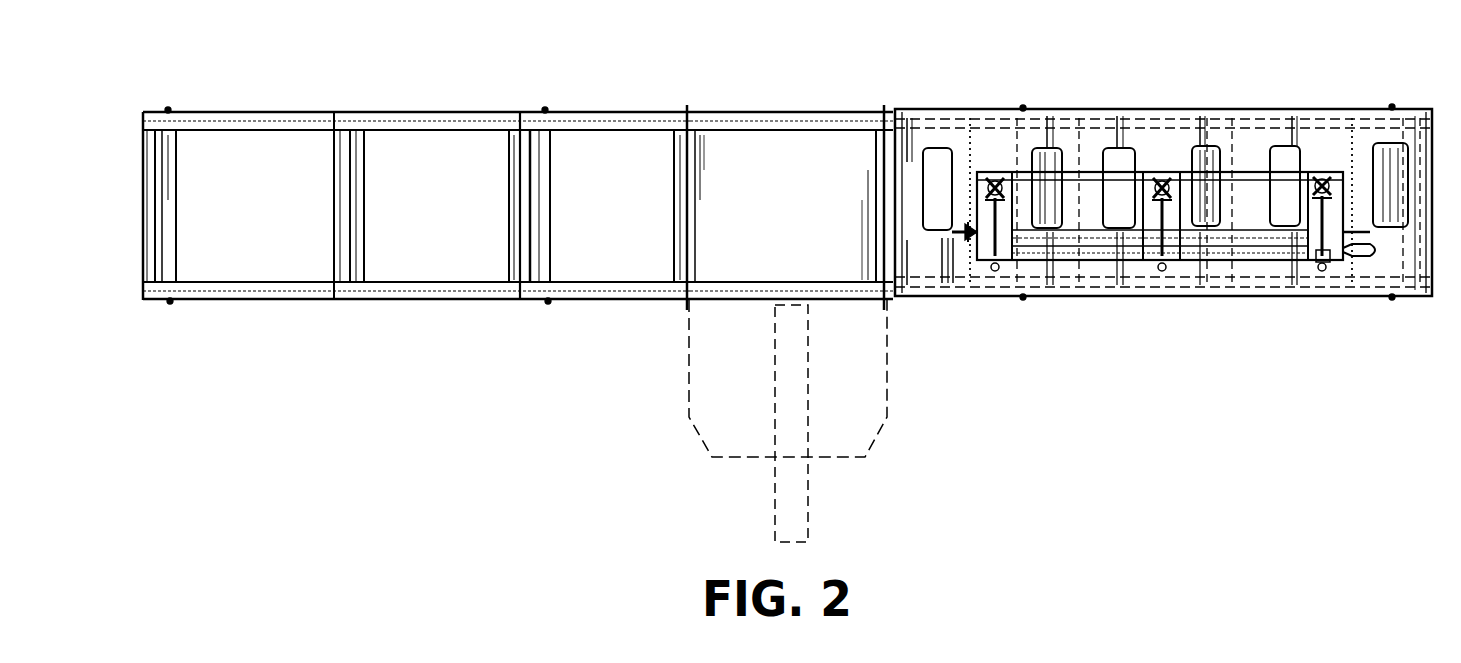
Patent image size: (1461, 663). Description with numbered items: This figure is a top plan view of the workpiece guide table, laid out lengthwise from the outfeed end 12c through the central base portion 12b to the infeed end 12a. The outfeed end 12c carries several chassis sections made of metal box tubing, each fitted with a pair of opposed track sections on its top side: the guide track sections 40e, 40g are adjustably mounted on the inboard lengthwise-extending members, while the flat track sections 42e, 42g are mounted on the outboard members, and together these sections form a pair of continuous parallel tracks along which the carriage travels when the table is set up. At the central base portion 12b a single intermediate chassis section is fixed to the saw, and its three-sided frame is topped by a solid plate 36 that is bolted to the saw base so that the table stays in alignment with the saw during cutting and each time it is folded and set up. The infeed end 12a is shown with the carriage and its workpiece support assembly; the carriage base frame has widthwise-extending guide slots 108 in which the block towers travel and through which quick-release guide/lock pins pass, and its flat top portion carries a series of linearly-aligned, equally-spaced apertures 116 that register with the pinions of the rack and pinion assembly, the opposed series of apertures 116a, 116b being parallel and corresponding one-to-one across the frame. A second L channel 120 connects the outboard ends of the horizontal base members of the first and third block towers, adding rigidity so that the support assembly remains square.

The infeed end 12a is at (1226, 38).
The central base portion 12b is at (780, 55).
The outfeed end 12c is at (380, 47).
The solid plate 36 is at (807, 170).
The guide track section 40e is at (583, 298).
The guide track section 40g is at (228, 298).
The flat track section 42e is at (600, 112).
The flat track section 42g is at (270, 112).
The guide slot 108 is at (986, 160).
The apertures 116 is at (975, 255).
The apertures 116a is at (1353, 147).
The apertures 116b is at (962, 148).
The second L channel 120 is at (1085, 168).